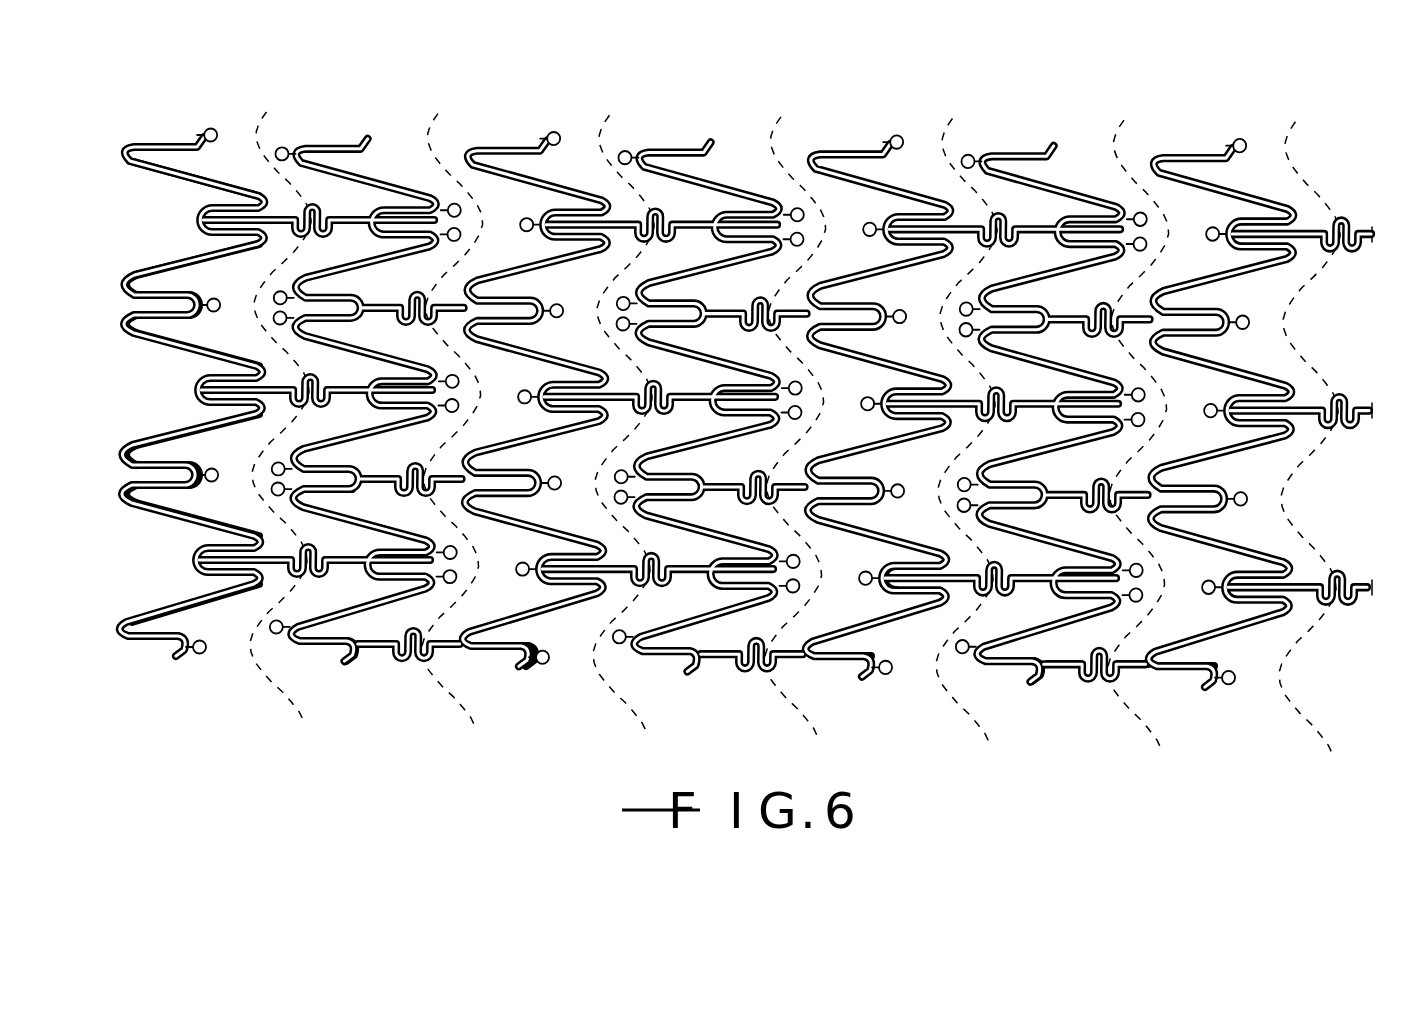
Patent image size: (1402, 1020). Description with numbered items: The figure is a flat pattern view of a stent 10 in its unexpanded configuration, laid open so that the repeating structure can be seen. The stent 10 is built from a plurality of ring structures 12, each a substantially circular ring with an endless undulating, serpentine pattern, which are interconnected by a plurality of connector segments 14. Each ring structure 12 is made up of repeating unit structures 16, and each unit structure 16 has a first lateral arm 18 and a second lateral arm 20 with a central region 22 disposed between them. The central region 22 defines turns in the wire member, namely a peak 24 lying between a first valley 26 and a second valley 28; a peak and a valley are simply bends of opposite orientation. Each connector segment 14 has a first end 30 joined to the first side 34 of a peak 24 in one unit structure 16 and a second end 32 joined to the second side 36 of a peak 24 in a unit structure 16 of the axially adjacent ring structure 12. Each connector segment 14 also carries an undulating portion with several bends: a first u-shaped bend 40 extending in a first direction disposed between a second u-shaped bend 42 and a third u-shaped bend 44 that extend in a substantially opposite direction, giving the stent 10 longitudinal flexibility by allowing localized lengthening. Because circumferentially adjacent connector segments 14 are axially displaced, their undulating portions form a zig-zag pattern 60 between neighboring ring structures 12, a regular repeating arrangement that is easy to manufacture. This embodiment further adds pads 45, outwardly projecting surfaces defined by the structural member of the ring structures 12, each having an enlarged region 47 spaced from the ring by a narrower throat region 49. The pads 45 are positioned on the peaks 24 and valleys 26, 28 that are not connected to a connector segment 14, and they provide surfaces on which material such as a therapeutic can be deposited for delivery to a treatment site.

The stent 10 is at (301, 58).
The ring structure 12 is at (133, 145).
The connector segment 14 is at (500, 652).
The unit structure 16 is at (168, 191).
The first lateral arm 18 is at (193, 270).
The second lateral arm 20 is at (200, 353).
The central region 22 is at (108, 268).
The peak 24 is at (196, 468).
The first valley 26 is at (122, 447).
The second valley 28 is at (122, 495).
The first end 30 is at (370, 662).
The second end 32 is at (526, 670).
The first side 34 is at (195, 484).
The second side 36 is at (338, 485).
The first u-shaped bend 40 is at (1108, 652).
The second u-shaped bend 42 is at (1034, 677).
The third u-shaped bend 44 is at (1130, 684).
The pad 45 is at (904, 446).
The enlarged region 47 is at (846, 420).
The throat region 49 is at (891, 587).
The zig-zag pattern 60 is at (645, 727).